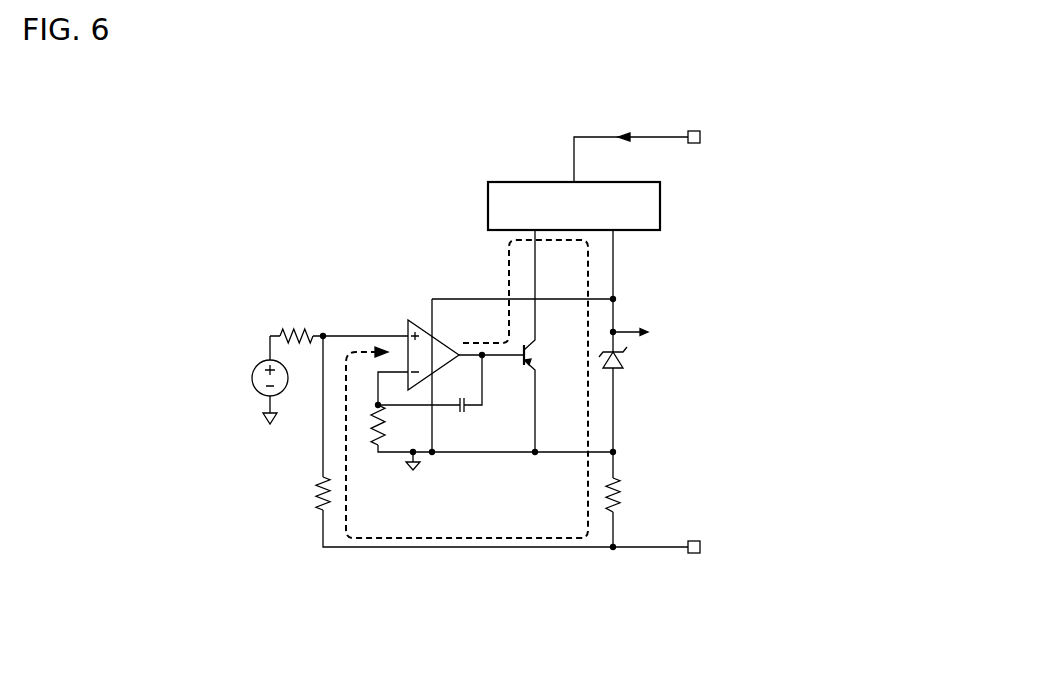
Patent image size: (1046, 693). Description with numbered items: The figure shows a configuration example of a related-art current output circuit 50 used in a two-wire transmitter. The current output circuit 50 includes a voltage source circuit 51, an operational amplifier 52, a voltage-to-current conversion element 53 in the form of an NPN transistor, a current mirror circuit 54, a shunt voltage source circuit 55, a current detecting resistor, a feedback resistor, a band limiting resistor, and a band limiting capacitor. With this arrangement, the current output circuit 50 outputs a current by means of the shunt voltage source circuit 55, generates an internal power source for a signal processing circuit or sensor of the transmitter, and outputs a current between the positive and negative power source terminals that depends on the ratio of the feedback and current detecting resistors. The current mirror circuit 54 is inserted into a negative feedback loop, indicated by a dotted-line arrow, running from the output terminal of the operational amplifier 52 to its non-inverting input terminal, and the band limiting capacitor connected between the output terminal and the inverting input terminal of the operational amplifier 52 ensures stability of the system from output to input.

The current output circuit 50 is at (539, 382).
The voltage source circuit 51 is at (257, 364).
The operational amplifier 52 is at (443, 338).
The voltage-to-current conversion element 53 is at (537, 356).
The current mirror circuit 54 is at (660, 210).
The shunt voltage source circuit 55 is at (627, 360).